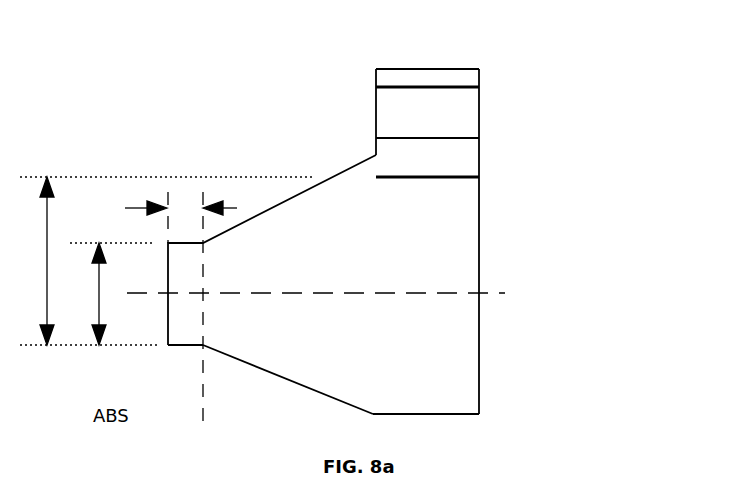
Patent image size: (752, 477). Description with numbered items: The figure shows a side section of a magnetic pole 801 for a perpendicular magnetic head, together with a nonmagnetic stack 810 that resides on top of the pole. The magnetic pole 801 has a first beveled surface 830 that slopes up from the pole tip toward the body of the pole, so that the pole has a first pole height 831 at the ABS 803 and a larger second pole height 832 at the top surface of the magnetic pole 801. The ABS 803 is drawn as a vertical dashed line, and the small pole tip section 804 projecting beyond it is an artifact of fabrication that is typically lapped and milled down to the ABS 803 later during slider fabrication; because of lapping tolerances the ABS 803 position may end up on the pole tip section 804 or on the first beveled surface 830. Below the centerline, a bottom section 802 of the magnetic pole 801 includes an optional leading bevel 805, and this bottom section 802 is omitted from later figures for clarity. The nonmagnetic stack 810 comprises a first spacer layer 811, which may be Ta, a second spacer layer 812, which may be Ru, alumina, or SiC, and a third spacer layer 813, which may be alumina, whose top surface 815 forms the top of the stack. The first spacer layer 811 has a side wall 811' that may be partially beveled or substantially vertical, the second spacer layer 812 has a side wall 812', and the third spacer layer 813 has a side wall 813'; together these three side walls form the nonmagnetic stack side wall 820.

The magnetic pole 801 is at (359, 250).
The bottom section 802 is at (522, 293).
The ABS 803 is at (154, 312).
The pole tip section 804 is at (162, 177).
The leading bevel 805 is at (288, 385).
The nonmagnetic stack 810 is at (602, 52).
The first spacer layer 811 is at (483, 158).
The second spacer layer 812 is at (483, 121).
The third spacer layer 813 is at (483, 74).
The top surface 815 is at (483, 43).
The side wall 811' is at (324, 142).
The side wall 812' is at (324, 112).
The side wall 813' is at (324, 70).
The nonmagnetic stack side wall 820 is at (262, 45).
The first beveled surface 830 is at (250, 176).
The first pole height 831 is at (112, 294).
The second pole height 832 is at (166, 261).